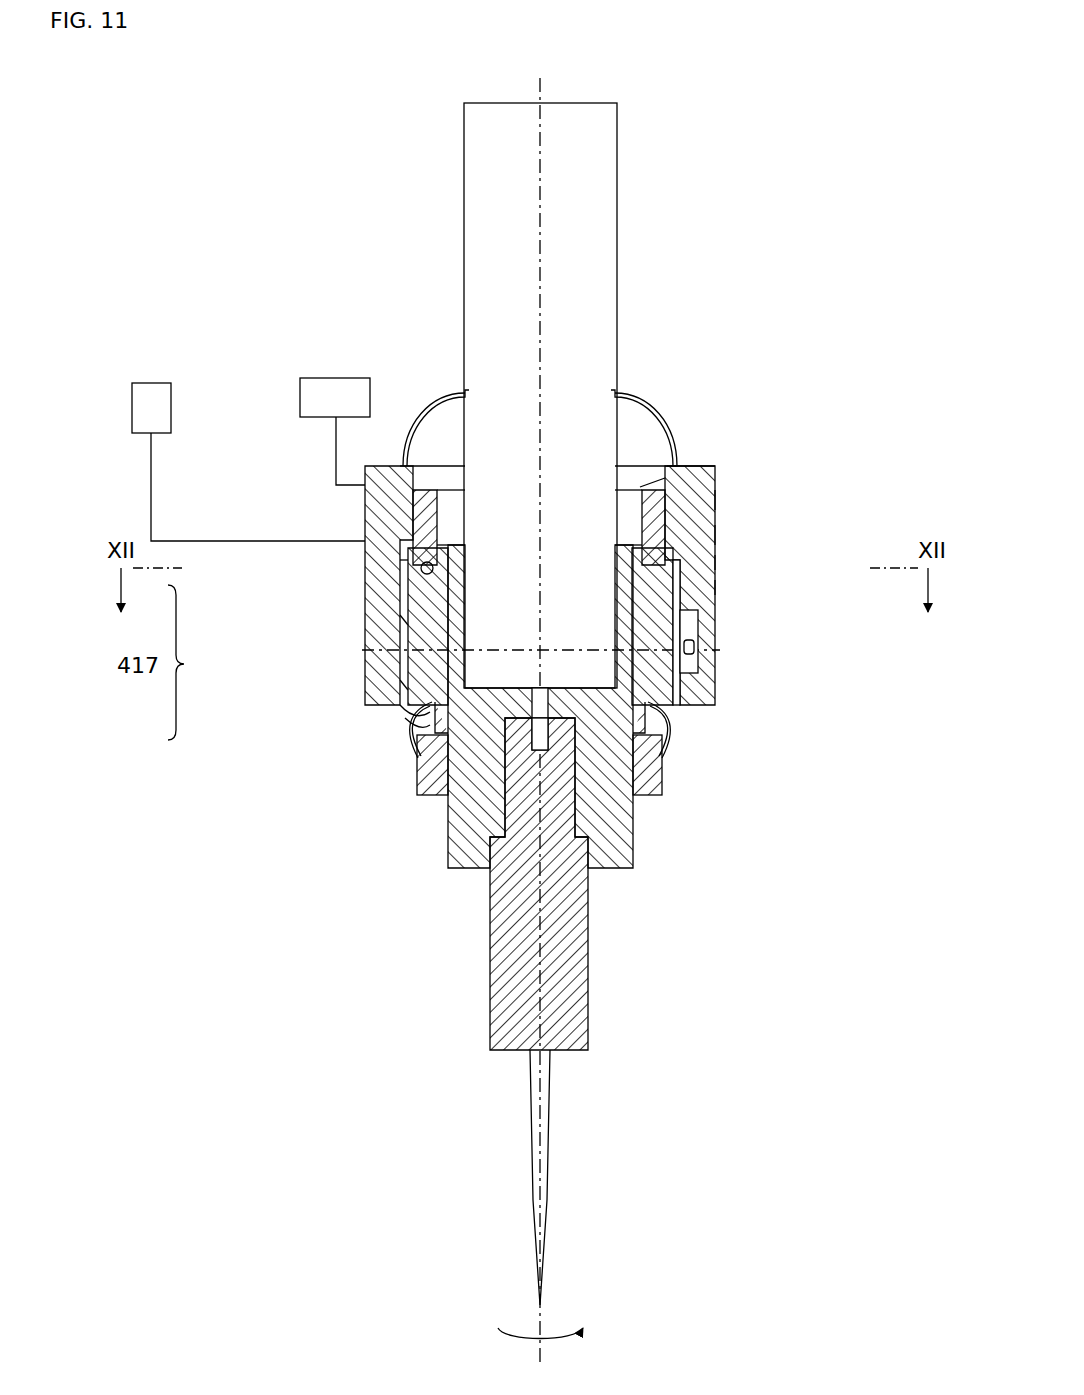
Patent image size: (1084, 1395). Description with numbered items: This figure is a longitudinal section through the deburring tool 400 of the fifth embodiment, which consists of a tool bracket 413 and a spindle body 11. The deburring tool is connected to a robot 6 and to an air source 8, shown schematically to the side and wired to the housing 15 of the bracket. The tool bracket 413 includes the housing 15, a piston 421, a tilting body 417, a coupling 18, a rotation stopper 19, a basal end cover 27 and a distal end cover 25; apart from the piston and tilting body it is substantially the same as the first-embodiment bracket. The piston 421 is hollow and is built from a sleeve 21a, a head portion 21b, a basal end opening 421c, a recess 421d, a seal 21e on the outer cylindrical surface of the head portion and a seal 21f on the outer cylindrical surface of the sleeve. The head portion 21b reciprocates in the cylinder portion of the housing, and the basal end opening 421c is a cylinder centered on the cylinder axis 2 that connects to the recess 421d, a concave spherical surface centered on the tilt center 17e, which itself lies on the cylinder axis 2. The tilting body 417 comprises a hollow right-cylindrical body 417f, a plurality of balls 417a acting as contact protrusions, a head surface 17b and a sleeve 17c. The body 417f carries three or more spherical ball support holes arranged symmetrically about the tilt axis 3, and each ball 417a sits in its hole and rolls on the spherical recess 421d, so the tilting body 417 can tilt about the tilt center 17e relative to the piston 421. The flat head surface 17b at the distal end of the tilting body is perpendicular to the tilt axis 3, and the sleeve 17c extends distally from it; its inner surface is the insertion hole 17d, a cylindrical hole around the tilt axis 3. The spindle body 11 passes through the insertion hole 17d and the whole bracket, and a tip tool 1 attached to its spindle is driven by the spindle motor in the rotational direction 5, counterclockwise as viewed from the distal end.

The tip tool 1 is at (548, 1196).
The cylinder axis 2 is at (541, 92).
The tilt axis 3 is at (545, 86).
The rotational direction 5 is at (589, 1335).
The robot 6 is at (335, 378).
The air source 8 is at (152, 383).
The spindle body 11 is at (640, 225).
The housing 15 is at (365, 513).
The head surface 17b is at (367, 685).
The sleeve 17c is at (400, 713).
The insertion hole 17d is at (407, 730).
The tilt center 17e is at (540, 650).
The coupling 18 is at (662, 772).
The rotation stopper 19 is at (715, 625).
The sleeve 21a is at (715, 480).
The head portion 21b is at (715, 585).
The seal 21e is at (715, 562).
The seal 21f is at (715, 500).
The distal end cover 25 is at (677, 727).
The basal end cover 27 is at (442, 422).
The deburring tool 400 is at (879, 62).
The tool bracket 413 is at (690, 415).
The tilting body 417 is at (715, 672).
The ball 417a is at (365, 580).
The body 417f is at (365, 620).
The piston 421 is at (858, 420).
The basal end opening 421c is at (640, 487).
The recess 421d is at (715, 535).